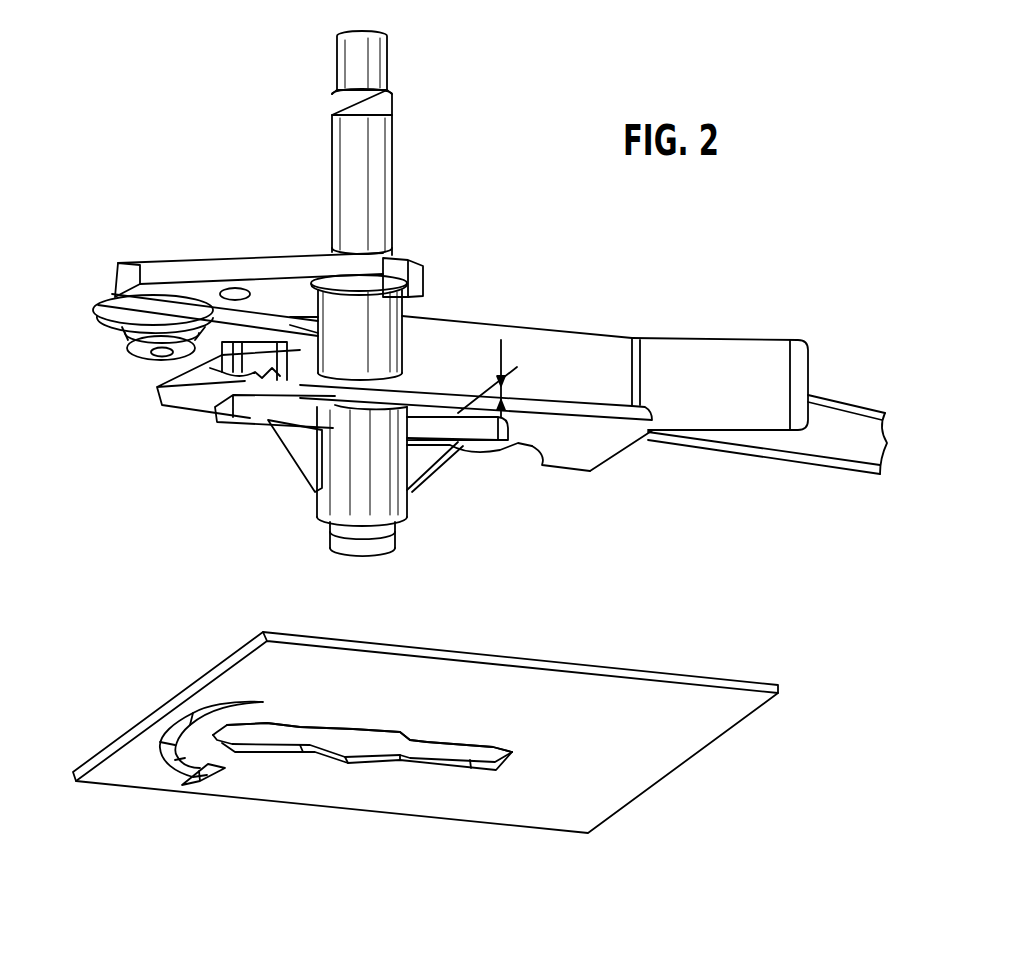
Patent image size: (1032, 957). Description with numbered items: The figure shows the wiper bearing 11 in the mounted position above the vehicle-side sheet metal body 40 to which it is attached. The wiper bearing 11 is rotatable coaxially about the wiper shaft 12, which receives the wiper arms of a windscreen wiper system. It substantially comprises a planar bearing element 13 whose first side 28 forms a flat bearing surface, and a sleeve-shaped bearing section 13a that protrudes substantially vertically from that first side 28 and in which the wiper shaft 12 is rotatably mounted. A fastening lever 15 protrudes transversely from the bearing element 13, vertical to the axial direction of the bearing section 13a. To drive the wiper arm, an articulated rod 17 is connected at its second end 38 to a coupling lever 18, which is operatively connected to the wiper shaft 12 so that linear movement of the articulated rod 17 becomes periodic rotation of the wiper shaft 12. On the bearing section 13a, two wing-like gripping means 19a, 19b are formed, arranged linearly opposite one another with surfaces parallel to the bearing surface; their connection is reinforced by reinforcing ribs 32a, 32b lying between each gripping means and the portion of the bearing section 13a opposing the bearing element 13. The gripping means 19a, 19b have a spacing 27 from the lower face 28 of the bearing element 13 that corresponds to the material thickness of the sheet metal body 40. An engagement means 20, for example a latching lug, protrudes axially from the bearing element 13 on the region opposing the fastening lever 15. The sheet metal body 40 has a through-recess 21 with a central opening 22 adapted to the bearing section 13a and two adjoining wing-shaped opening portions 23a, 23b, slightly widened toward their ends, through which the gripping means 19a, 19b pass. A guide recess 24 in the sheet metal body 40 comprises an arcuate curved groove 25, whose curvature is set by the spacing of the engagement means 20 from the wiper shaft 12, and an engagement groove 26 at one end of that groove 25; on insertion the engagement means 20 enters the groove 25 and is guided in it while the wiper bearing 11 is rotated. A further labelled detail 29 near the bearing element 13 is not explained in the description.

The wiper bearing 11 is at (457, 358).
The wiper shaft 12 is at (372, 64).
The bearing element 13 is at (605, 436).
The bearing section 13a is at (342, 494).
The fastening lever 15 is at (760, 362).
The articulated rod 17 is at (850, 420).
The coupling lever 18 is at (228, 270).
The wing-like gripping means 19a is at (248, 426).
The wing-like gripping means 19b is at (476, 446).
The engagement means 20 is at (207, 415).
The through-recess 21 is at (340, 755).
The central opening 22 is at (365, 745).
The wing-shaped opening portion 23a is at (253, 732).
The wing-shaped opening portion 23b is at (440, 750).
The guide recess 24 is at (162, 772).
The arcuate curved groove 25 is at (167, 743).
The engagement groove 26 is at (200, 782).
The spacing 27 is at (517, 367).
The first side 28 is at (583, 450).
The clip 29 is at (178, 378).
The reinforcing rib 32a is at (292, 456).
The reinforcing rib 32b is at (426, 460).
The second end 38 is at (100, 312).
The sheet metal body 40 is at (692, 718).